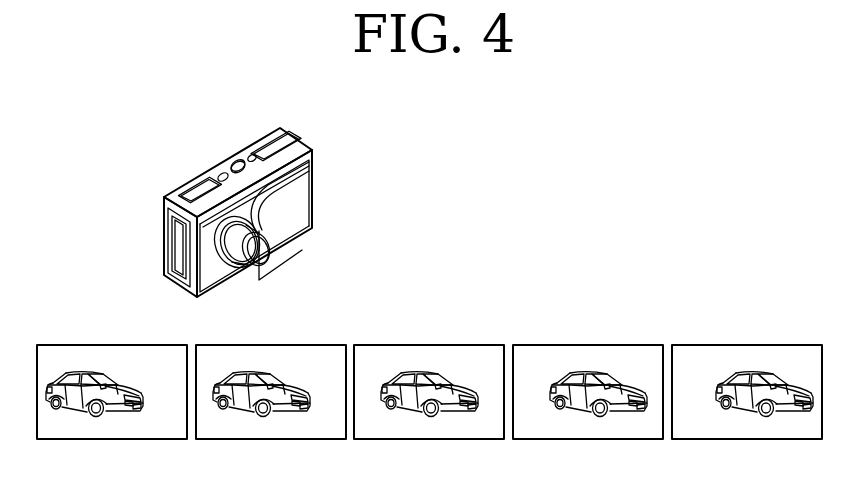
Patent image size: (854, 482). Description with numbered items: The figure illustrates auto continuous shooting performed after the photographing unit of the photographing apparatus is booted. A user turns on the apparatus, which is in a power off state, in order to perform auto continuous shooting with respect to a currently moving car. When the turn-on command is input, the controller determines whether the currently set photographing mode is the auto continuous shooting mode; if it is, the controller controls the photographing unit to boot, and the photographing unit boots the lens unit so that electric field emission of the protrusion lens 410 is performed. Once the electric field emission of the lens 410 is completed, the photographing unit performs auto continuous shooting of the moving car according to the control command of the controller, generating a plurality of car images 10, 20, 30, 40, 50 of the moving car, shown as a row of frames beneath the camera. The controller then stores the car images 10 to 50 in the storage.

The protrusion lens 410 is at (297, 134).
The car image 10 is at (161, 345).
The car image 20 is at (320, 345).
The car image 30 is at (479, 345).
The car image 40 is at (636, 345).
The car image 50 is at (795, 345).